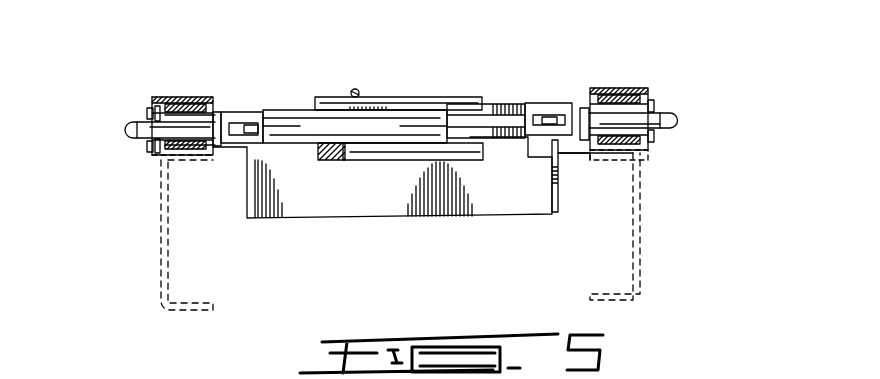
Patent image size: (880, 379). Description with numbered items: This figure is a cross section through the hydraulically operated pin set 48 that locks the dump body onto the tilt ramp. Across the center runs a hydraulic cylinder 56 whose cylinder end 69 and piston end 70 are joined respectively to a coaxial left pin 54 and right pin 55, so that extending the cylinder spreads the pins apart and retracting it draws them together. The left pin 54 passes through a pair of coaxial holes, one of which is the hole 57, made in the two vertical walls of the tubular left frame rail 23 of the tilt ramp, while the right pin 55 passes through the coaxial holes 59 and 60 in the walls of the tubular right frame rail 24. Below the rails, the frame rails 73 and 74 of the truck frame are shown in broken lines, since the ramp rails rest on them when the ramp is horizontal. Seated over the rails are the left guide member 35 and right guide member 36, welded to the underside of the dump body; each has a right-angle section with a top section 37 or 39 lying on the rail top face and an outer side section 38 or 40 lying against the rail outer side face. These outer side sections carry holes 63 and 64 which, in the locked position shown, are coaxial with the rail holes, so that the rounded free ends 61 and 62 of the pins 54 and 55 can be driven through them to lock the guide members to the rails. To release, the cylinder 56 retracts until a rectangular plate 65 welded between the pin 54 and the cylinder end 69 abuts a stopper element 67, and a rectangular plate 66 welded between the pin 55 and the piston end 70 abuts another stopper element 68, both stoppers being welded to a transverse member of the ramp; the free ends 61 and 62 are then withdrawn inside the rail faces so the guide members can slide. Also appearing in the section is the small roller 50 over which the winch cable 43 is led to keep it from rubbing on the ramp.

The left frame rail 23 is at (160, 157).
The right frame rail 24 is at (612, 145).
The left guide member 35 is at (165, 118).
The right guide member 36 is at (642, 107).
The top section 37 is at (192, 97).
The outer side section 38 is at (157, 147).
The top section 39 is at (607, 89).
The outer side section 40 is at (645, 140).
The cable 43 is at (358, 90).
The set of pins 48 is at (313, 80).
The roller 50 is at (427, 97).
The left pin 54 is at (137, 124).
The right pin 55 is at (660, 116).
The hydraulic cylinder 56 is at (165, 115).
The hole 57 is at (211, 150).
The hole 59 is at (640, 150).
The hole 60 is at (595, 151).
The free end 61 is at (126, 132).
The free end 62 is at (680, 122).
The hole 63 is at (152, 115).
The hole 64 is at (650, 108).
The rectangular plate 65 is at (217, 113).
The rectangular plate 66 is at (582, 109).
The stopper element 67 is at (273, 110).
The stopper element 68 is at (528, 104).
The cylinder end 69 is at (263, 135).
The piston end 70 is at (542, 156).
The frame rail 73 is at (163, 238).
The frame rail 74 is at (642, 208).